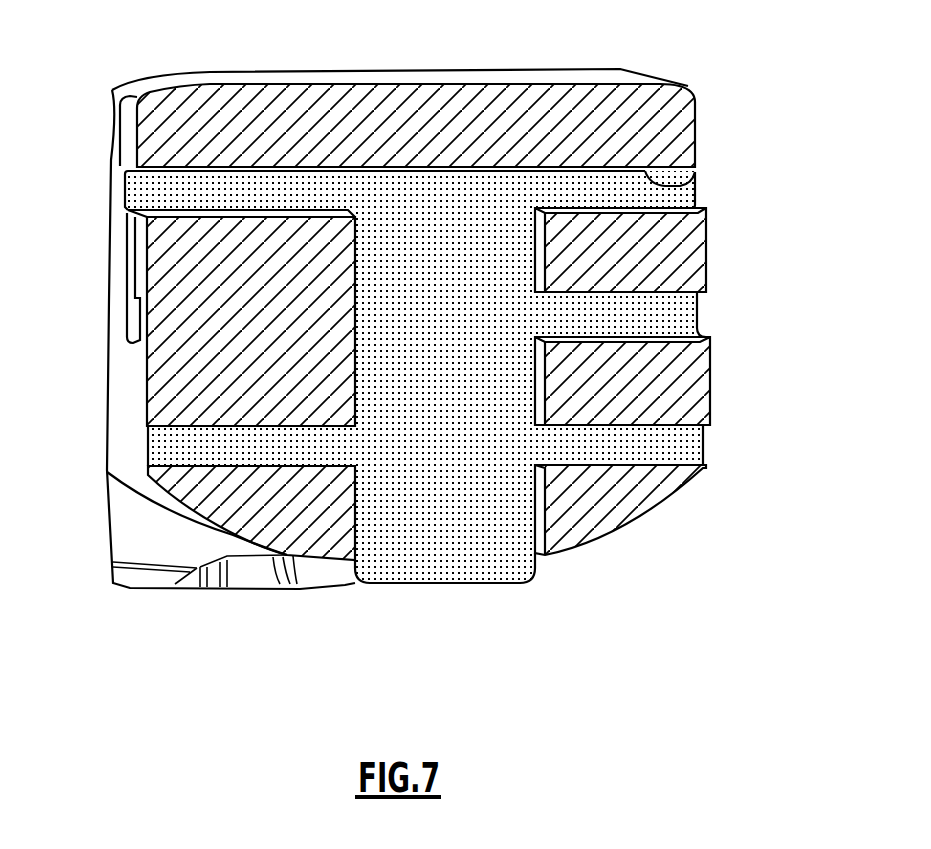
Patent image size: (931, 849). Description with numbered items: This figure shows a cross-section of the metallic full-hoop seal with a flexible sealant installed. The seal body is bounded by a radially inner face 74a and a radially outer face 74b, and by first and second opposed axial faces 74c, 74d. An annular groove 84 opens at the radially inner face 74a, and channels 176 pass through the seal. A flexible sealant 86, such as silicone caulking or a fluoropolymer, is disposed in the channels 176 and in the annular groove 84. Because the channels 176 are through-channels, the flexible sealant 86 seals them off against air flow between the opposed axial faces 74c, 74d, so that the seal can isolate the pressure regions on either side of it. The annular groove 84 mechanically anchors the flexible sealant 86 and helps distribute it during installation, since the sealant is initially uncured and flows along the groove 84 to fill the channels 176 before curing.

The radially inner face 74a is at (552, 555).
The radially outer face 74b is at (509, 80).
The first axial face 74c is at (135, 340).
The second axial face 74d is at (707, 242).
The annular groove 84 is at (413, 510).
The flexible sealant 86 is at (497, 353).
The channels 176 is at (697, 174).